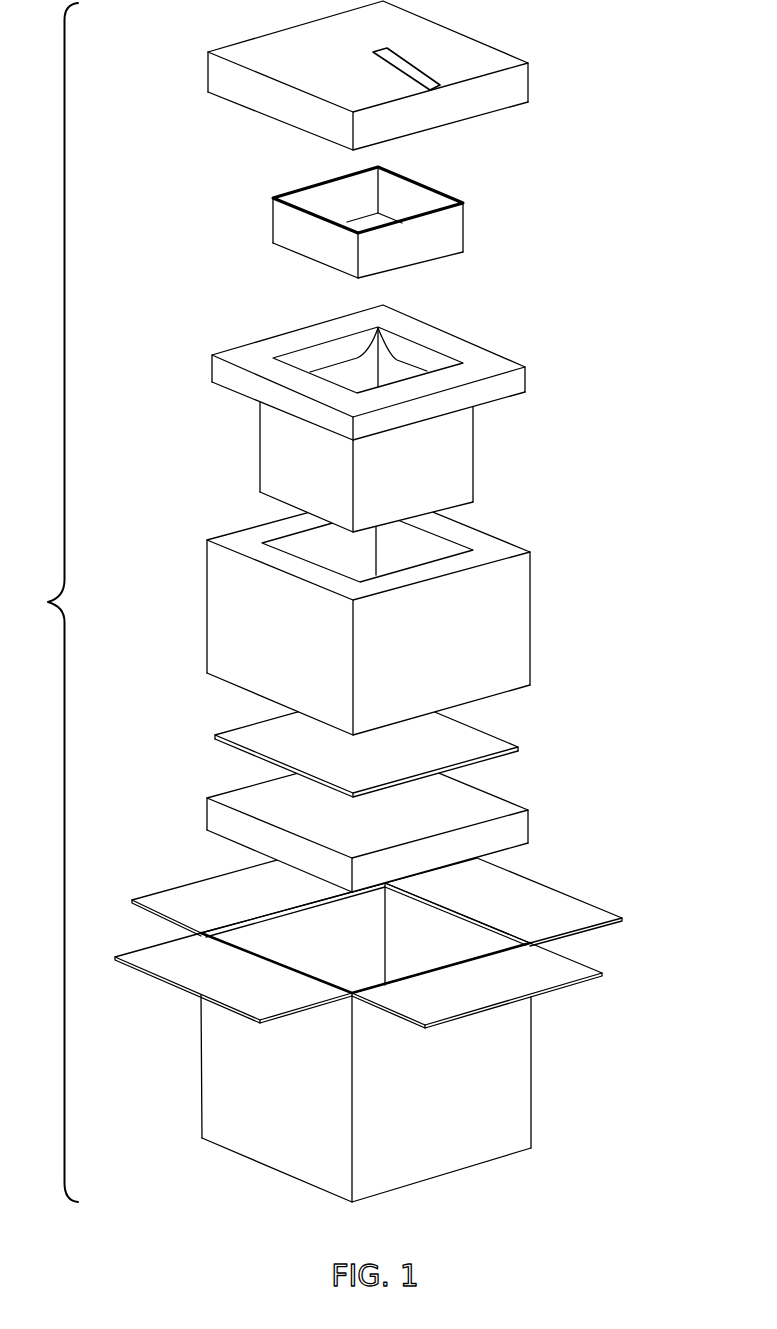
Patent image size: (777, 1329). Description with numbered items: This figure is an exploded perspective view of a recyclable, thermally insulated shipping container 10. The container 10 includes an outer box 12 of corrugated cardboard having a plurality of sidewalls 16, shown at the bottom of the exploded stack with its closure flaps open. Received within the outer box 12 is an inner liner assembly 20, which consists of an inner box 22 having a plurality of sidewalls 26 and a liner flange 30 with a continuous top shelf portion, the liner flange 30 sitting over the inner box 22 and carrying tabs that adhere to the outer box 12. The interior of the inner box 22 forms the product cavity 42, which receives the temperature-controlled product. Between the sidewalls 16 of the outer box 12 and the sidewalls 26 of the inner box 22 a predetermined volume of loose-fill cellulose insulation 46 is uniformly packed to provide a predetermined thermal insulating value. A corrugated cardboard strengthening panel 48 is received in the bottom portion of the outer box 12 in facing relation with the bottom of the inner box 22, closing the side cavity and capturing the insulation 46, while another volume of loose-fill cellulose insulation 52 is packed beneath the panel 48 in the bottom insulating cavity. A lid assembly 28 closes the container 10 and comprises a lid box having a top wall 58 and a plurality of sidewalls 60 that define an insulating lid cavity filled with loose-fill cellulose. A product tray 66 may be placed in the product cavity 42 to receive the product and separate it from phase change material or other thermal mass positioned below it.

The container 10 is at (48, 602).
The outer box 12 is at (537, 1067).
The sidewalls 16 is at (292, 933).
The inner liner assembly 20 is at (406, 408).
The inner box 22 is at (490, 476).
The sidewalls 26 is at (460, 443).
The lid assembly 28 is at (400, 75).
The liner flange 30 is at (243, 355).
The product cavity 42 is at (332, 372).
The loose-fill cellulose insulation 46 is at (545, 618).
The strengthening panel 48 is at (535, 744).
The loose-fill cellulose insulation 52 is at (544, 821).
The top wall 58 is at (438, 33).
The sidewalls 60 is at (258, 95).
The product tray 66 is at (480, 224).